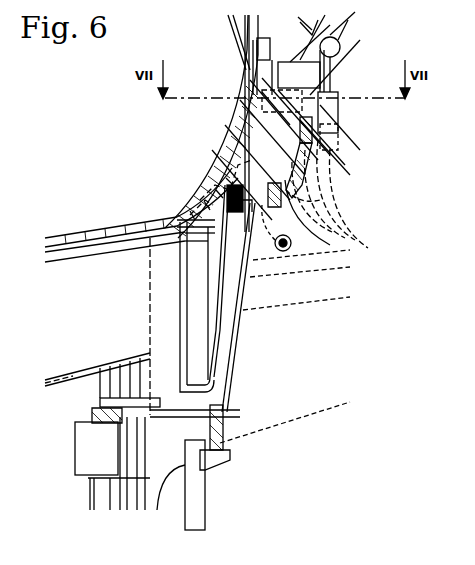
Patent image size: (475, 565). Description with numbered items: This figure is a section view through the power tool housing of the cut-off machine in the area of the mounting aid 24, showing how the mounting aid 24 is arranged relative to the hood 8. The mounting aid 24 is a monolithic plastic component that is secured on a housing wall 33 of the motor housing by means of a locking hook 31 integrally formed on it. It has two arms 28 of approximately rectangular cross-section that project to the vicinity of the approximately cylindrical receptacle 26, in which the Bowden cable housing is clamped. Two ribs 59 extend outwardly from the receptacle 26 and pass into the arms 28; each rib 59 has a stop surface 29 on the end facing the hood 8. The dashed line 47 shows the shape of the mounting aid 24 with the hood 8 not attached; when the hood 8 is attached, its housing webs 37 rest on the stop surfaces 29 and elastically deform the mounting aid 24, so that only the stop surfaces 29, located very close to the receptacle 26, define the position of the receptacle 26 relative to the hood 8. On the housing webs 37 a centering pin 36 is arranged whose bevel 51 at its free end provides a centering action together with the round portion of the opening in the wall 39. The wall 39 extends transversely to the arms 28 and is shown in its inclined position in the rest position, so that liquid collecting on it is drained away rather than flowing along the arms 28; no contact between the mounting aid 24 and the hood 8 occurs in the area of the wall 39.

The hood 8 is at (92, 232).
The mounting aid 24 is at (246, 367).
The receptacle 26 is at (345, 115).
The arms 28 is at (230, 330).
The stop surface 29 is at (310, 108).
The locking hook 31 is at (226, 443).
The housing wall 33 is at (192, 475).
The centering pin 36 is at (226, 200).
The housing webs 37 is at (286, 108).
The wall 39 is at (272, 178).
The dashed line 47 is at (240, 152).
The bevel 51 is at (252, 255).
The ribs 59 is at (304, 122).